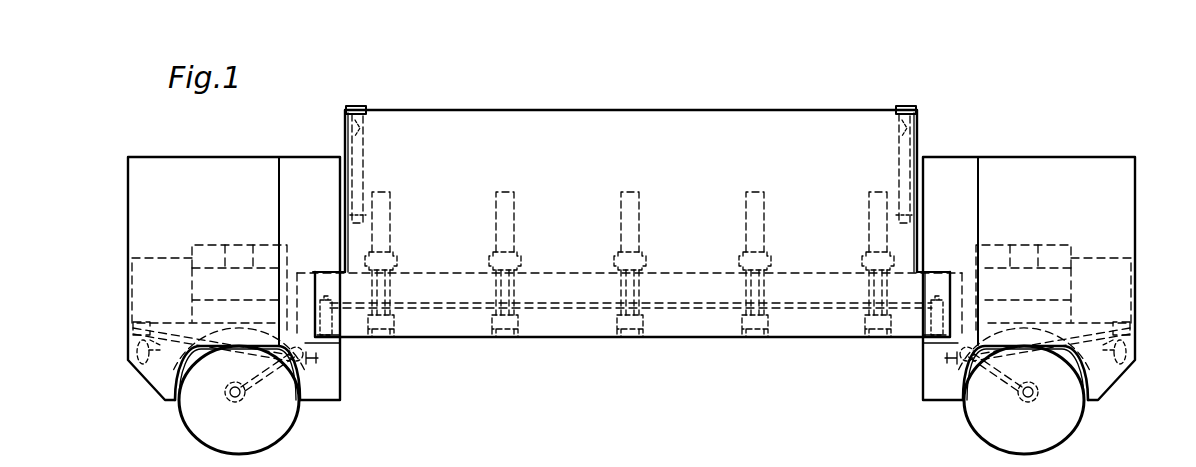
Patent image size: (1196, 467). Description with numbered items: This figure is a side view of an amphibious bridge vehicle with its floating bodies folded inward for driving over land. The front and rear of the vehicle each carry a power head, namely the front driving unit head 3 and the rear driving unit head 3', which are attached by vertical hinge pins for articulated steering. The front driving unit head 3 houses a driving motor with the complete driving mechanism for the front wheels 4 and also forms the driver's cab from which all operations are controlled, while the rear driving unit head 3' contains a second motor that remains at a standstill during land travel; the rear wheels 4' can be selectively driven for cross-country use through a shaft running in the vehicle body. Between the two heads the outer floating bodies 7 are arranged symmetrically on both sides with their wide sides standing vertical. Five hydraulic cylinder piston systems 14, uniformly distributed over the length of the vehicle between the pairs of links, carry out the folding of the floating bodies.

The front driving unit head 3 is at (234, 259).
The rear driving unit head 3' is at (1029, 257).
The front wheels 4 is at (249, 404).
The rear wheels 4' is at (1031, 406).
The outer floating bodies 7 is at (735, 120).
The hydraulic cylinder piston systems 14 is at (625, 222).